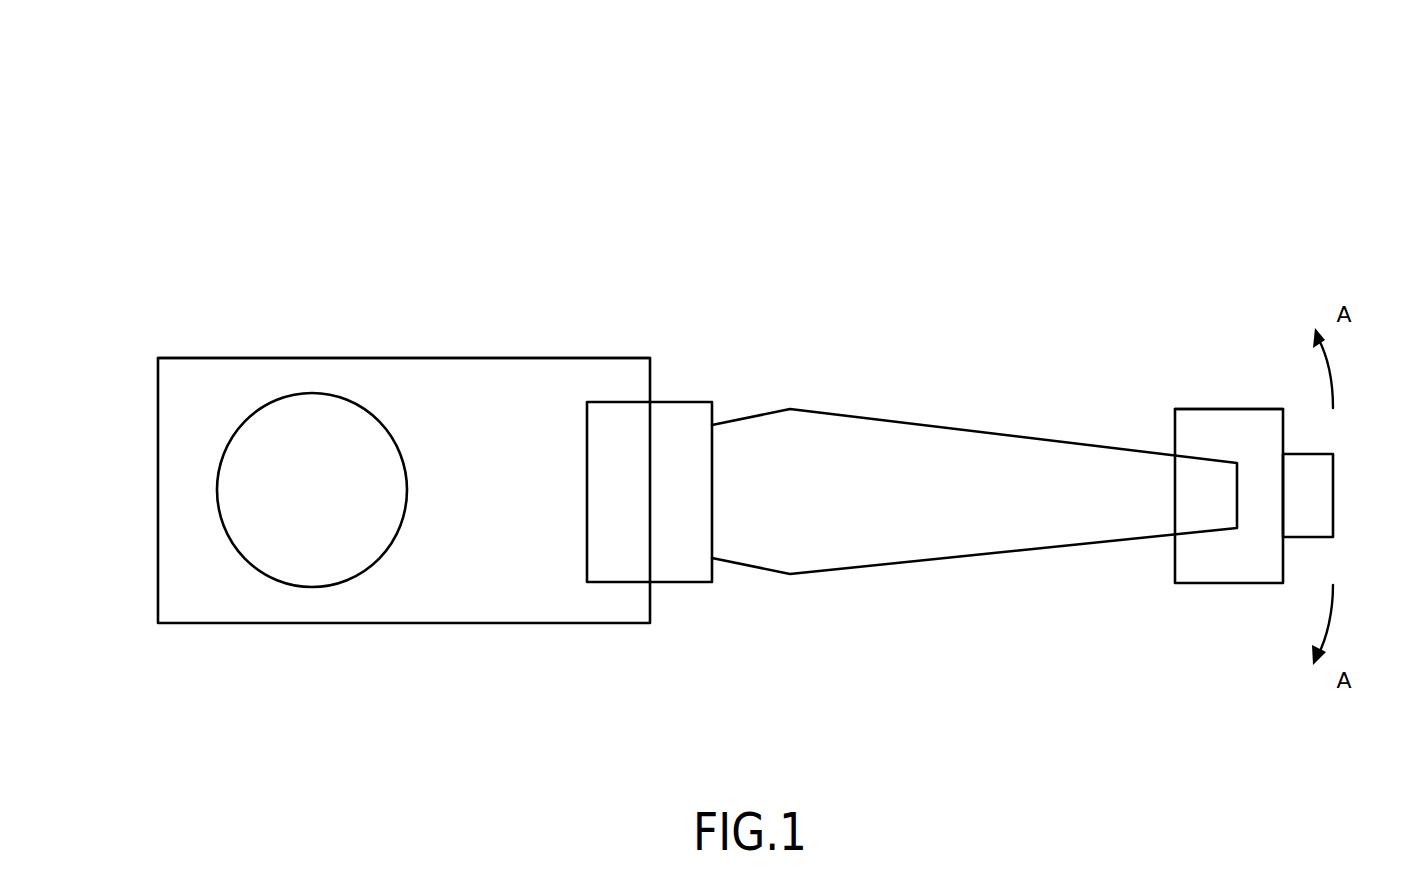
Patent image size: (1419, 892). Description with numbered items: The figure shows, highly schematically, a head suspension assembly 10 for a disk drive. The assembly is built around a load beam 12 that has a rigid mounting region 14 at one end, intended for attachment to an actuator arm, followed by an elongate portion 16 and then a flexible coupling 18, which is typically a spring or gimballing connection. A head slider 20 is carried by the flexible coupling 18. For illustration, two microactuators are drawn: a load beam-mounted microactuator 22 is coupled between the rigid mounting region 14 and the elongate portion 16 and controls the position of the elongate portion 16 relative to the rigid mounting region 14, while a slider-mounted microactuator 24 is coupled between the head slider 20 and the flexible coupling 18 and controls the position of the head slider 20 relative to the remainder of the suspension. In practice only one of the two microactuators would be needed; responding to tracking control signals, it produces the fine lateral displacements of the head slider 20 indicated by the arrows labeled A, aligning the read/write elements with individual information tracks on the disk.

The head suspension assembly 10 is at (756, 184).
The load beam 12 is at (572, 358).
The rigid mounting region 14 is at (158, 501).
The elongate portion 16 is at (933, 562).
The flexible coupling 18 is at (1210, 452).
The head slider 20 is at (1333, 495).
The load beam-mounted microactuator 22 is at (657, 505).
The slider-mounted microactuator 24 is at (1246, 574).